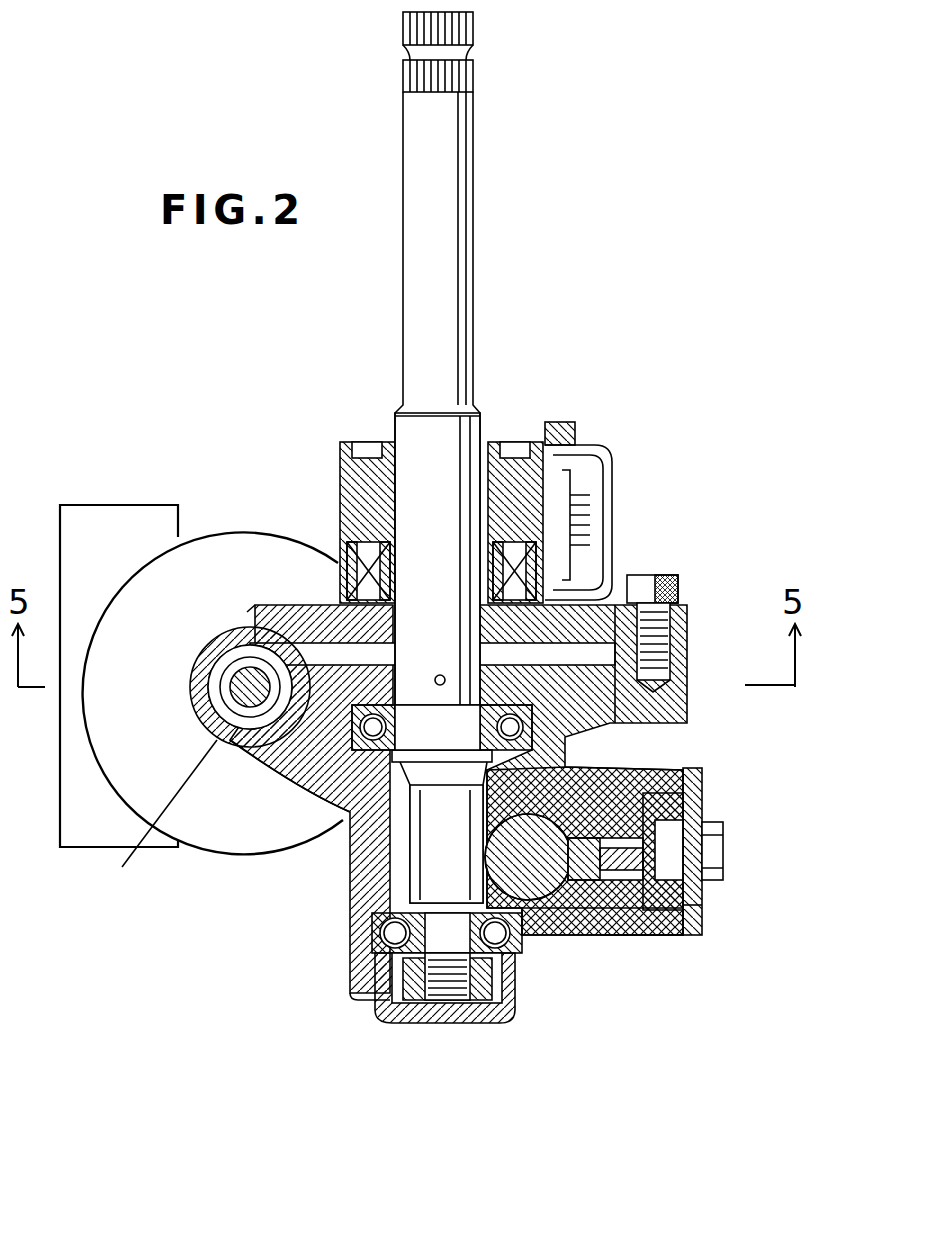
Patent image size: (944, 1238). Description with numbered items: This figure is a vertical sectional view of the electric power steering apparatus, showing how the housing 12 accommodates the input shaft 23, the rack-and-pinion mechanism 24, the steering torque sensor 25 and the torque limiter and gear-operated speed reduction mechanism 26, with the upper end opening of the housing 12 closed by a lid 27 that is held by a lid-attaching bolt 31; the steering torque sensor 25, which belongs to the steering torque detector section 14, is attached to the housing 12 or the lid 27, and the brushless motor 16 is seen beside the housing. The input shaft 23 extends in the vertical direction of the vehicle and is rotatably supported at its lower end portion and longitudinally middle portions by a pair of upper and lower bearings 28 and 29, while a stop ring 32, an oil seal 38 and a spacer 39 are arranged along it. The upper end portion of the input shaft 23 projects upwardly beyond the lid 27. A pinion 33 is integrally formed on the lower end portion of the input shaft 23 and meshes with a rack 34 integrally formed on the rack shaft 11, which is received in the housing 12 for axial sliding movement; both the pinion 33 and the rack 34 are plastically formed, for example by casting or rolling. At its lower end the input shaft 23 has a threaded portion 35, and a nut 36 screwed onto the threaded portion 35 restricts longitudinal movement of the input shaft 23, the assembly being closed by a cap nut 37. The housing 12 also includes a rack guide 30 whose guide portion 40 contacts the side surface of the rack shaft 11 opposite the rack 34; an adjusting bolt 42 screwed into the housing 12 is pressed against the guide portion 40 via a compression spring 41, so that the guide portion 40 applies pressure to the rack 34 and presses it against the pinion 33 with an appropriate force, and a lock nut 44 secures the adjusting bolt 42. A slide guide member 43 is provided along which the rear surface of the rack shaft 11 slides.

The rack shaft 11 is at (703, 930).
The housing 12 is at (685, 650).
The steering torque detector section 14 is at (587, 465).
The brushless motor 16 is at (228, 530).
The input shaft 23 is at (465, 240).
The rack-and-pinion mechanism 24 is at (383, 805).
The steering torque sensor 25 is at (345, 545).
The torque limiter and gear-operated speed reduction mechanism 26 is at (135, 850).
The lid 27 is at (640, 605).
The upper bearing 28 is at (378, 950).
The lower bearing 29 is at (330, 740).
The rack guide 30 is at (730, 900).
The lid-attaching bolt 31 is at (672, 568).
The stop ring 32 is at (343, 815).
The pinion 33 is at (362, 880).
The rack 34 is at (520, 865).
The threaded portion 35 is at (462, 1023).
The nut 36 is at (510, 1022).
The cap nut 37 is at (515, 1005).
The oil seal 38 is at (512, 440).
The spacer 39 is at (520, 662).
The guide portion 40 is at (703, 912).
The compression spring 41 is at (650, 880).
The adjusting bolt 42 is at (710, 838).
The slide guide member 43 is at (607, 940).
The lock nut 44 is at (700, 778).